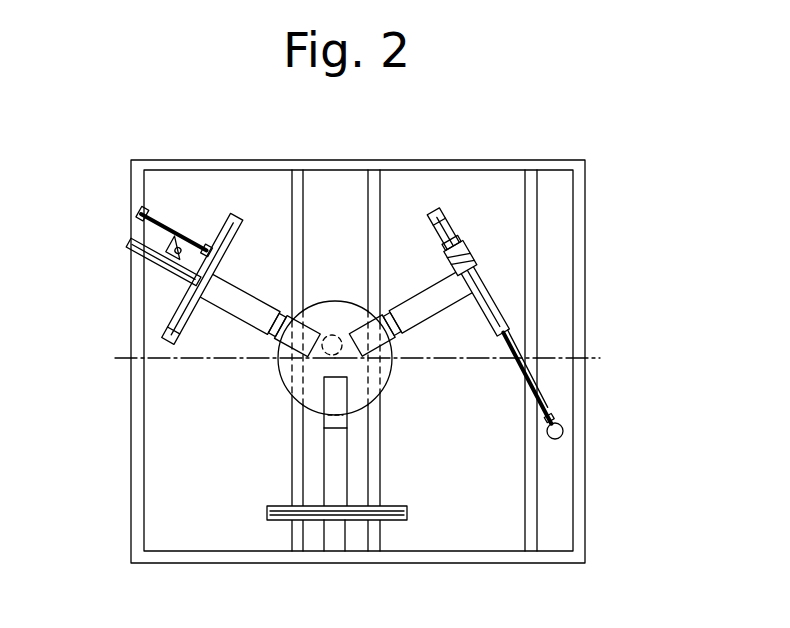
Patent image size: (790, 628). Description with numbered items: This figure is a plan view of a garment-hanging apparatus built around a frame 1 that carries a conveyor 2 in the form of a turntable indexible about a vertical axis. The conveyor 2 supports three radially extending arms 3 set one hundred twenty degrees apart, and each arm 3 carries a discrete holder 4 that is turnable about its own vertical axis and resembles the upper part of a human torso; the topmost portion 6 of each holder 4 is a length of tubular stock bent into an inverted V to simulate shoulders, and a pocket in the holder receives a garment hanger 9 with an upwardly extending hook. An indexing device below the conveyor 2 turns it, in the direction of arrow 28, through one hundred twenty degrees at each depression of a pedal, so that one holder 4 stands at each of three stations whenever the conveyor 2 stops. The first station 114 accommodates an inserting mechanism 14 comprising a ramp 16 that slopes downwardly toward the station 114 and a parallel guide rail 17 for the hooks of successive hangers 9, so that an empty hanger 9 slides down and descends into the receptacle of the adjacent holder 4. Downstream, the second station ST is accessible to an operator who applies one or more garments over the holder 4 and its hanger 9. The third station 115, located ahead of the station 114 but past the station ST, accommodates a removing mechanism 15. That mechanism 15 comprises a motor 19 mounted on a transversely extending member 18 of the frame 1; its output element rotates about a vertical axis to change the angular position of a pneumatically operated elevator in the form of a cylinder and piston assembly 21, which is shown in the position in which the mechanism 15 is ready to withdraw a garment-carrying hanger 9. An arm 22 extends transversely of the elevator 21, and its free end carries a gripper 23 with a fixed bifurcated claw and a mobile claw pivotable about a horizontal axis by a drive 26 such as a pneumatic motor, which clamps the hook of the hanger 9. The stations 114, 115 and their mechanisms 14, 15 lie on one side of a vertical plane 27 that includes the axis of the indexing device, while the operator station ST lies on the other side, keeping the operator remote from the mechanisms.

The frame 1 is at (130, 463).
The conveyor 2 is at (328, 301).
The arm 3 is at (233, 279).
The holder 4 is at (186, 335).
The upper portion 6 is at (183, 302).
The garment hanger 9 is at (281, 521).
The inserting mechanism 14 is at (178, 218).
The first station 114 is at (208, 215).
The third station 115 is at (511, 210).
The removing mechanism 15 is at (533, 368).
The ramp 16 is at (160, 257).
The guide rail 17 is at (148, 236).
The transversely extending member 18 is at (580, 521).
The motor 19 is at (564, 431).
The cylinder and piston assembly 21 is at (562, 437).
The arm 22 is at (523, 378).
The gripper 23 is at (479, 268).
The drive 26 is at (463, 260).
The vertical plane 27 is at (457, 362).
The arrow 28 is at (258, 370).
The second station ST is at (420, 494).